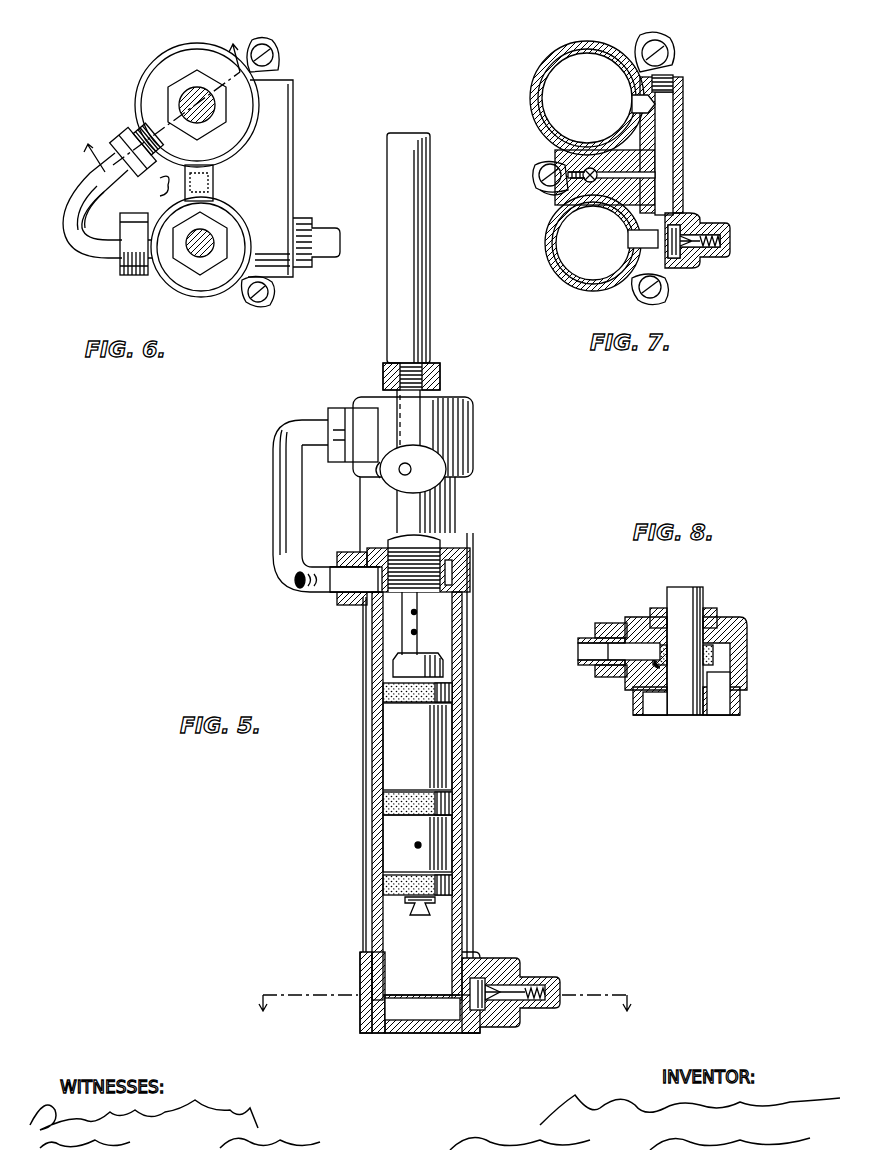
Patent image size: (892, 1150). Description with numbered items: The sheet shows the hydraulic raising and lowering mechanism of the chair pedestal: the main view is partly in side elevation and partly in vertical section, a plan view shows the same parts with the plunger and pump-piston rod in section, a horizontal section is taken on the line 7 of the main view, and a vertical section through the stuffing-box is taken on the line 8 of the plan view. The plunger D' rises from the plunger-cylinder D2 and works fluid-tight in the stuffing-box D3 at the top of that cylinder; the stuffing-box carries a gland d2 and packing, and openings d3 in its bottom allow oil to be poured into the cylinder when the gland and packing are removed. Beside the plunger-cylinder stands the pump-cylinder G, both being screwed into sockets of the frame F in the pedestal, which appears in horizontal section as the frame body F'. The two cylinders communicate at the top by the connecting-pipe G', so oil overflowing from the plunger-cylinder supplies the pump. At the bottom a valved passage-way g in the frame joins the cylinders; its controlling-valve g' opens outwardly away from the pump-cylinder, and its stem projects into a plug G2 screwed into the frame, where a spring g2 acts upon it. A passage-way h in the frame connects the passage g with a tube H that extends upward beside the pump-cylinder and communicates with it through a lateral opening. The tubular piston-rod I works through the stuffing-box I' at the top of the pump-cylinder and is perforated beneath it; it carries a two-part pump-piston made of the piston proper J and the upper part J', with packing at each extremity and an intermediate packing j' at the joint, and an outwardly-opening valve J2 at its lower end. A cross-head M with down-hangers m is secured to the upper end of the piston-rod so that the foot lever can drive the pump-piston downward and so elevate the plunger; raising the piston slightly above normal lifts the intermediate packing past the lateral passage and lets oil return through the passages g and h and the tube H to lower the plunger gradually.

In FIG. 5, the plunger D' is at (390, 333).
In FIG. 6, the plunger D' is at (167, 102).
In FIG. 8, the plunger D' is at (665, 646).
In FIG. 5, the cross-head M is at (440, 375).
In FIG. 5, the stuffing-box D3 is at (462, 425).
In FIG. 8, the stuffing-box D3 is at (745, 633).
In FIG. 5, the down-hangers m is at (440, 467).
In FIG. 5, the connecting-pipe G' is at (310, 500).
In FIG. 6, the connecting-pipe G' is at (97, 196).
In FIG. 8, the connecting-pipe G' is at (602, 650).
In FIG. 5, the stuffing-box I' is at (413, 570).
In FIG. 6, the stuffing-box I' is at (201, 262).
In FIG. 5, the tubular piston-rod I is at (442, 634).
In FIG. 6, the tubular piston-rod I is at (176, 261).
In FIG. 5, the pump-cylinder G is at (395, 796).
In FIG. 5, the outer tube D2 is at (365, 803).
In FIG. 6, the outer tube D2 is at (190, 47).
In FIG. 7, the outer tube D2 is at (587, 98).
In FIG. 8, the outer tube D2 is at (657, 708).
In FIG. 5, the intermediate packing j' is at (447, 789).
In FIG. 5, the upper piston part J' is at (417, 746).
In FIG. 5, the piston proper J is at (417, 843).
In FIG. 5, the outwardly-opening valve J2 is at (415, 910).
In FIG. 5, the frame F is at (420, 1004).
In FIG. 5, the plug G2 is at (533, 980).
In FIG. 6, the plug G2 is at (320, 232).
In FIG. 7, the plug G2 is at (732, 232).
In FIG. 5, the valved passage-way g is at (507, 1016).
In FIG. 5, the spring g2 is at (558, 995).
In FIG. 7, the spring g2 is at (728, 243).
In FIG. 5, the controlling-valve g' is at (517, 1009).
In FIG. 7, the controlling-valve g' is at (712, 258).
In FIG. 5, the section line 7 is at (443, 1016).
In FIG. 6, the section line 8 is at (156, 95).
In FIG. 6, the gland d2 is at (180, 108).
In FIG. 8, the gland d2 is at (713, 612).
In FIG. 7, the body F' is at (648, 145).
In FIG. 7, the passage-way h is at (640, 175).
In FIG. 7, the tube H is at (567, 188).
In FIG. 8, the openings d3 is at (658, 672).